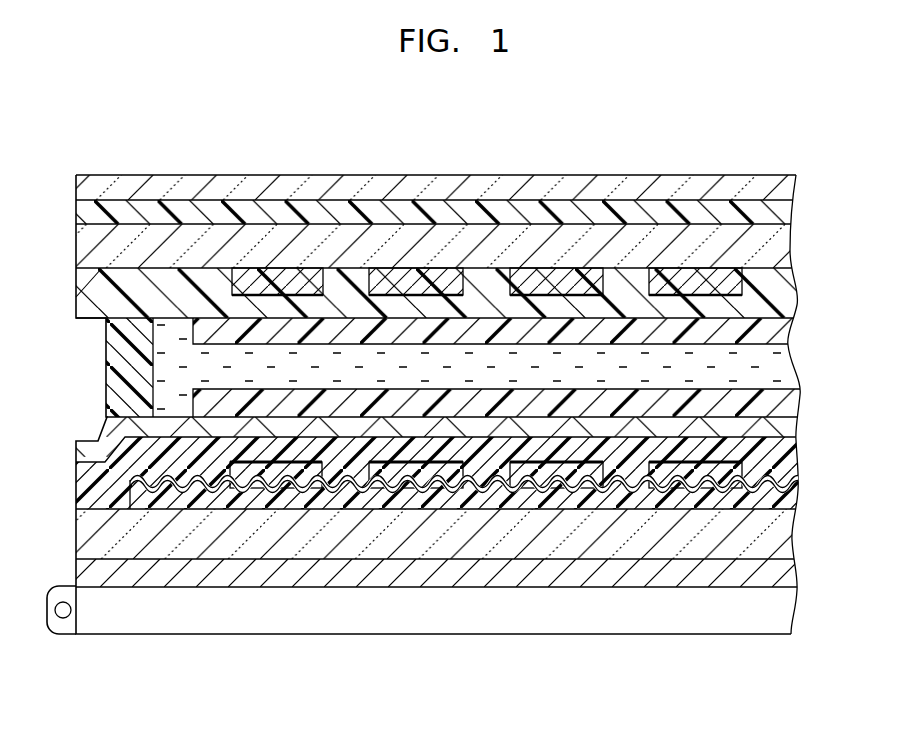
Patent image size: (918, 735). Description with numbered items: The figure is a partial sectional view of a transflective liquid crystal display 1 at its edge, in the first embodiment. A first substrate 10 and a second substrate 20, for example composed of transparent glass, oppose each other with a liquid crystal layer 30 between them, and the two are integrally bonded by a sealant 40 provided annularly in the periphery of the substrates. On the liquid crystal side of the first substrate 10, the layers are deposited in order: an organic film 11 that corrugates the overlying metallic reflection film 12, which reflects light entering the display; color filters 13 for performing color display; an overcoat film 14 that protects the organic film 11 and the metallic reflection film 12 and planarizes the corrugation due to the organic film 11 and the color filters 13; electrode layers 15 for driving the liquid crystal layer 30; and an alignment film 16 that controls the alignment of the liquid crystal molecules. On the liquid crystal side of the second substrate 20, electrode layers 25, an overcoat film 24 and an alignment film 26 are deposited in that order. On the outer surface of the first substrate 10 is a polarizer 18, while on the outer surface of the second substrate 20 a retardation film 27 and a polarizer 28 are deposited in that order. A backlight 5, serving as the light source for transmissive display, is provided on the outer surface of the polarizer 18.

The transflective liquid crystal display 1 is at (764, 150).
The backlight 5 is at (785, 612).
The first substrate 10 is at (780, 535).
The organic film 11 is at (786, 505).
The metallic reflection film 12 is at (786, 483).
The color filters 13 is at (290, 490).
The overcoat film 14 is at (775, 452).
The electrode layers 15 is at (785, 428).
The alignment film 16 is at (785, 410).
The polarizer 18 is at (782, 572).
The second substrate 20 is at (780, 250).
The overcoat film 24 is at (785, 297).
The electrode layers 25 is at (265, 283).
The alignment film 26 is at (780, 337).
The retardation film 27 is at (785, 212).
The polarizer 28 is at (782, 188).
The liquid crystal layer 30 is at (778, 375).
The sealant 40 is at (130, 378).